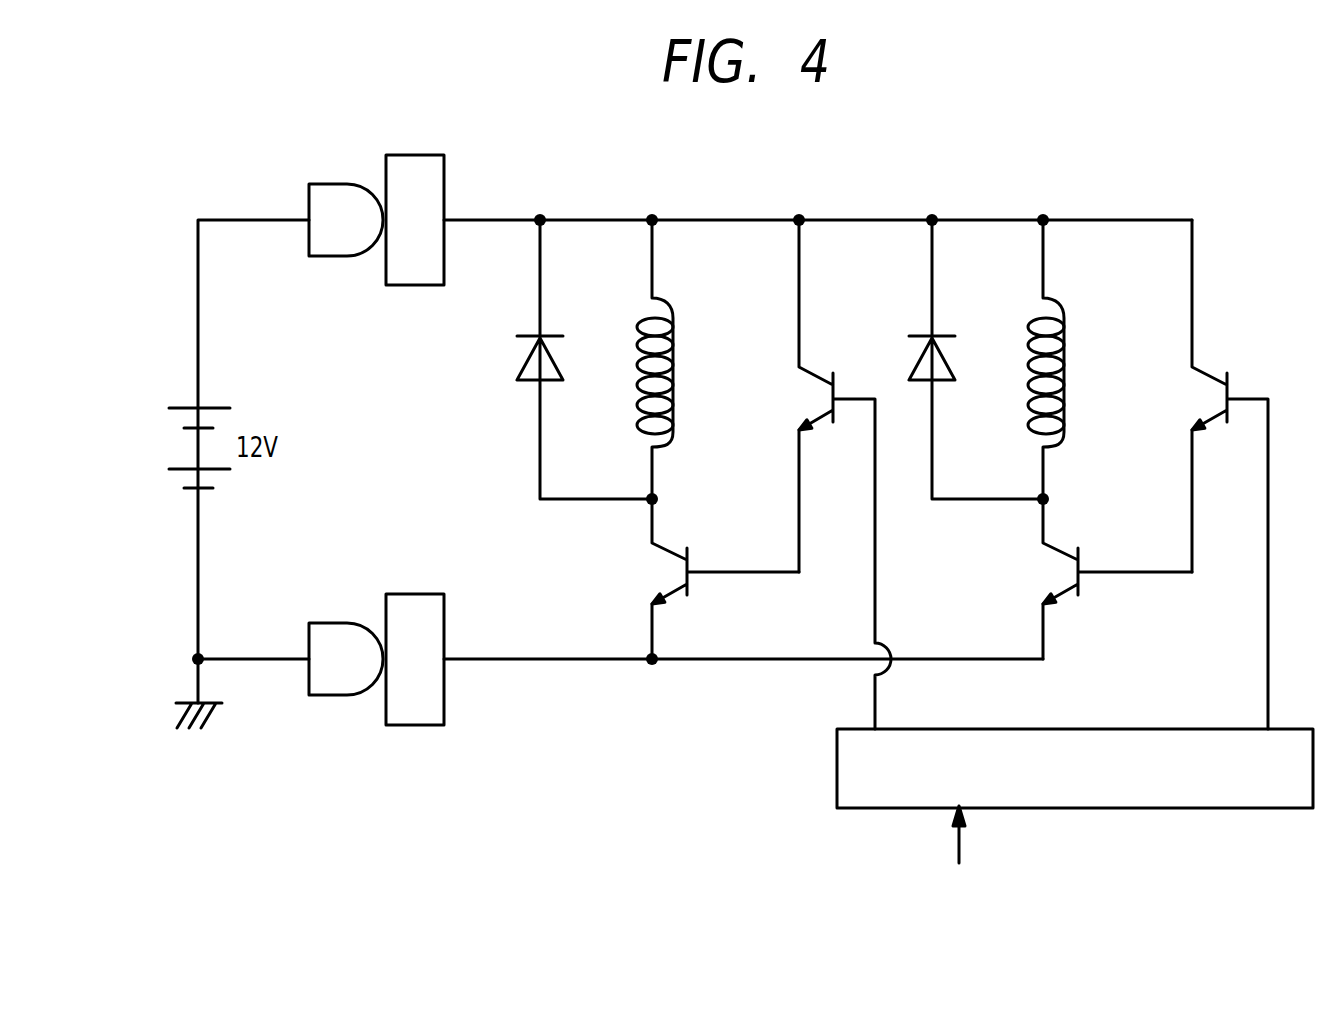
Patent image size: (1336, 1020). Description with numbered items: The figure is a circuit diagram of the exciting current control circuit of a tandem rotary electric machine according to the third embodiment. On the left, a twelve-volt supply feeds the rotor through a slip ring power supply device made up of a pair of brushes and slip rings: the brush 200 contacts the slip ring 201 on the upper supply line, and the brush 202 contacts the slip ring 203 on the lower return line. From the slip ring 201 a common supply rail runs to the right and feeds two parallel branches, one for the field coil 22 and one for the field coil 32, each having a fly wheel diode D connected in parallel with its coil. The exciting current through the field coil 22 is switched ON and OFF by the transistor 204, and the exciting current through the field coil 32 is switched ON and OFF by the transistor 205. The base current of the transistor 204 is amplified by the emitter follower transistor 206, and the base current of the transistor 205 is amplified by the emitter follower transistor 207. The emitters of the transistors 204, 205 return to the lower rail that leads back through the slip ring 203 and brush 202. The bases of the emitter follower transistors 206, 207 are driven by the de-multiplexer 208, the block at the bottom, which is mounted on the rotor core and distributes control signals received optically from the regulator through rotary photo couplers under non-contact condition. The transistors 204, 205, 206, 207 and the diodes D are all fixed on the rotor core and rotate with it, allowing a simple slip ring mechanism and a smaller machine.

The brush 200 is at (343, 182).
The slip ring 201 is at (445, 180).
The brush 202 is at (343, 620).
The slip ring 203 is at (412, 593).
The fly wheel diode D is at (565, 358).
The field coil 22 is at (680, 387).
The field coil 32 is at (1070, 387).
The transistor 204 is at (695, 588).
The transistor 205 is at (1065, 605).
The emitter follower transistor 206 is at (815, 372).
The emitter follower transistor 207 is at (1210, 372).
The de-multiplexer 208 is at (1215, 810).